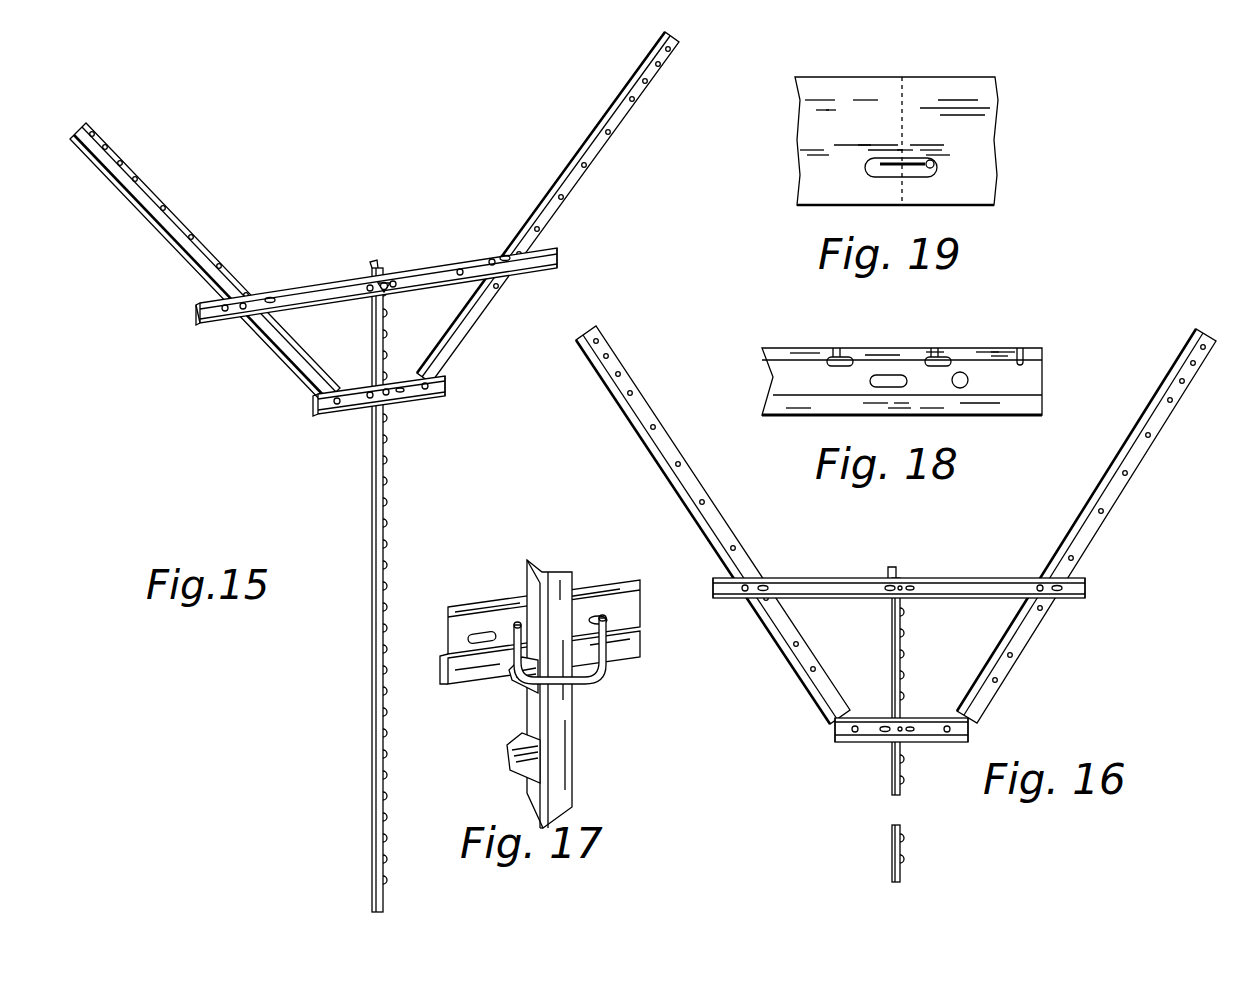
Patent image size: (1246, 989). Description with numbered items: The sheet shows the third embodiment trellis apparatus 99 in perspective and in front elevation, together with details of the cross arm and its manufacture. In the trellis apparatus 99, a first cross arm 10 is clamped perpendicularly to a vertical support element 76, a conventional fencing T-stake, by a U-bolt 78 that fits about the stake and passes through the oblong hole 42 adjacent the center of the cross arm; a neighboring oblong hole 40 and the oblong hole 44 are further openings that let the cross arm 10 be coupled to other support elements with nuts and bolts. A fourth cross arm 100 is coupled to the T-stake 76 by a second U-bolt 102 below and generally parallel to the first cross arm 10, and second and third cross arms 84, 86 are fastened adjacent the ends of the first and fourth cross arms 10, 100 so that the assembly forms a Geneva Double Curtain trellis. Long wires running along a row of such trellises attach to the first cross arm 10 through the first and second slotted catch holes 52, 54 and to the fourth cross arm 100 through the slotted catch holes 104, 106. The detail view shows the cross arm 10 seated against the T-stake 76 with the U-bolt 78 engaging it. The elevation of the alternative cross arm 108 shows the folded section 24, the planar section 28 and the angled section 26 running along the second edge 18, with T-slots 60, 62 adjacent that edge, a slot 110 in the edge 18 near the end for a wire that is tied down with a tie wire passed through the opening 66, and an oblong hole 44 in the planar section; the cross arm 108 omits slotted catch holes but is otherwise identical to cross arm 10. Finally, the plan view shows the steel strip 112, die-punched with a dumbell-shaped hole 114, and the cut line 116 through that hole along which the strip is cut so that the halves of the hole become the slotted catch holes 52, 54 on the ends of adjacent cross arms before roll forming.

In FIG. 15, the cross arm apparatus 10 is at (310, 293).
In FIG. 17, the cross arm apparatus 10 is at (535, 645).
In FIG. 16, the cross arm apparatus 10 is at (835, 587).
In FIG. 18, the second edge 18 is at (987, 345).
In FIG. 18, the folded section 24 is at (802, 407).
In FIG. 18, the angled section 26 is at (875, 350).
In FIG. 18, the planar section 28 is at (1003, 378).
In FIG. 17, the oblong hole 40 is at (480, 645).
In FIG. 17, the oblong hole 42 is at (604, 605).
In FIG. 18, the oblong hole 44 is at (880, 382).
In FIG. 15, the first slotted catch hole 52 is at (200, 312).
In FIG. 16, the first slotted catch hole 52 is at (717, 597).
In FIG. 15, the second slotted catch hole 54 is at (557, 260).
In FIG. 16, the second slotted catch hole 54 is at (1080, 592).
In FIG. 18, the T-slot 60 is at (832, 350).
In FIG. 18, the T-slot 62 is at (945, 350).
In FIG. 18, the opening 66 is at (967, 382).
In FIG. 15, the vertical support element 76 is at (390, 473).
In FIG. 17, the vertical support element 76 is at (558, 588).
In FIG. 16, the vertical support element 76 is at (892, 785).
In FIG. 15, the U-bolt 78 is at (387, 288).
In FIG. 17, the U-bolt 78 is at (577, 667).
In FIG. 15, the second cross arm 84 is at (145, 192).
In FIG. 16, the second cross arm 84 is at (727, 537).
In FIG. 15, the third cross arm 86 is at (603, 123).
In FIG. 16, the third cross arm 86 is at (1073, 537).
In FIG. 15, the third embodiment trellis apparatus 99 is at (272, 479).
In FIG. 16, the third embodiment trellis apparatus 99 is at (1052, 655).
In FIG. 15, the fourth cross arm 100 is at (350, 402).
In FIG. 16, the fourth cross arm 100 is at (873, 730).
In FIG. 15, the U-bolt 102 is at (387, 394).
In FIG. 15, the slotted catch hole 104 is at (316, 407).
In FIG. 16, the slotted catch hole 104 is at (835, 727).
In FIG. 15, the slotted catch hole 106 is at (447, 387).
In FIG. 16, the slotted catch hole 106 is at (968, 727).
In FIG. 18, the alternative embodiment cross arm apparatus 108 is at (788, 375).
In FIG. 18, the slot 110 is at (1020, 348).
In FIG. 19, the steel strip 112 is at (832, 97).
In FIG. 19, the dumbell-shaped hole 114 is at (933, 165).
In FIG. 19, the cut line 116 is at (902, 105).